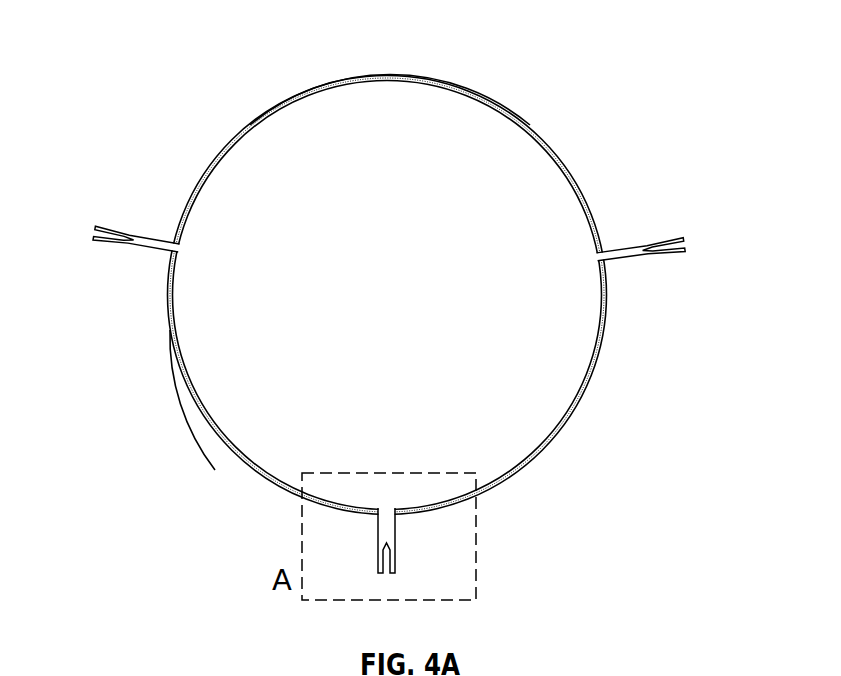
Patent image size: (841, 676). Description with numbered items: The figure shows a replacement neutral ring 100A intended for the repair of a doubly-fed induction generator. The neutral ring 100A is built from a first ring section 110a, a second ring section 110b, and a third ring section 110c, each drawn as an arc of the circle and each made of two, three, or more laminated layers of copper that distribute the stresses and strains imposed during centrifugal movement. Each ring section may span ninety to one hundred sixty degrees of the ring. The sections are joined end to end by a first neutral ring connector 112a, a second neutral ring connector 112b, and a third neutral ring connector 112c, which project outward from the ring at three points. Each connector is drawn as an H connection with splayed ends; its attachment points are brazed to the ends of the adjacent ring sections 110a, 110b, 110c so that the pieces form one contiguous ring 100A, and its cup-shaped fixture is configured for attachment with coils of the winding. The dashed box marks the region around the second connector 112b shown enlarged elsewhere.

The neutral ring 100A is at (160, 38).
The first ring section 110a is at (606, 322).
The second ring section 110b is at (205, 418).
The third ring section 110c is at (428, 86).
The first neutral ring connector 112a is at (642, 246).
The second neutral ring connector 112b is at (392, 528).
The third neutral ring connector 112c is at (113, 222).